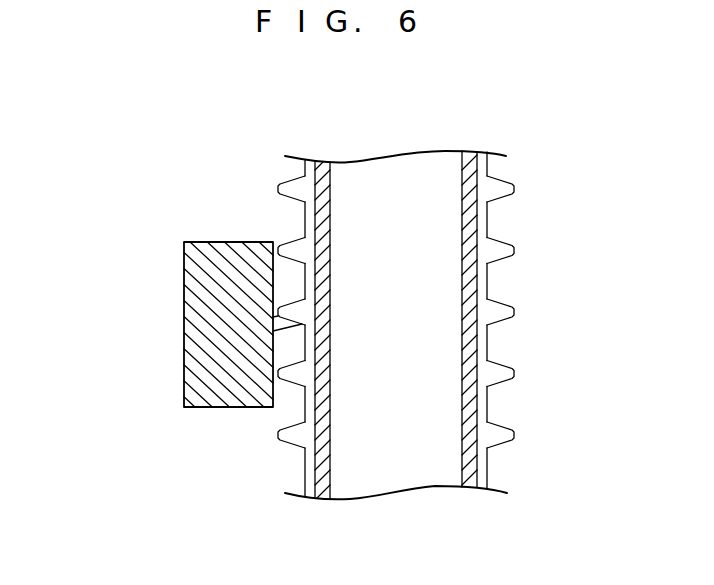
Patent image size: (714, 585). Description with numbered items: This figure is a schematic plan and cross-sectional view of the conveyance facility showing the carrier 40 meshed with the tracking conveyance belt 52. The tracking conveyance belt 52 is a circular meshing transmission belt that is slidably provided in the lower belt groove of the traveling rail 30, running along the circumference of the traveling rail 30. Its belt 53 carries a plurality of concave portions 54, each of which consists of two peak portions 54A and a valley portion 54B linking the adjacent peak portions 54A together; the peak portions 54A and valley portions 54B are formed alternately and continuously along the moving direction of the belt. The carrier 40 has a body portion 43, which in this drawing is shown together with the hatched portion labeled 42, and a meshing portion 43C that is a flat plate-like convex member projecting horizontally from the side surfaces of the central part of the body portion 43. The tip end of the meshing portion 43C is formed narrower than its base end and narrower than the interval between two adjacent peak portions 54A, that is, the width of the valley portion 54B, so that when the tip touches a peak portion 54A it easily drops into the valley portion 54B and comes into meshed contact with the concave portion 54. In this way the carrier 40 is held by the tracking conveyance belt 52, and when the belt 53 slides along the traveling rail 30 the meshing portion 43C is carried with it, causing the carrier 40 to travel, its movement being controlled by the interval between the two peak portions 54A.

The traveling rail 30 is at (405, 473).
The tracking conveyance belt 52 is at (396, 290).
The belt 53 is at (462, 153).
The concave portion 54 is at (370, 323).
The peak portion 54A is at (288, 190).
The valley portion 54B is at (308, 274).
The carrier 40 is at (220, 427).
The body portion 42 is at (177, 324).
The body portion 43 is at (197, 287).
The meshing portion 43C is at (302, 324).